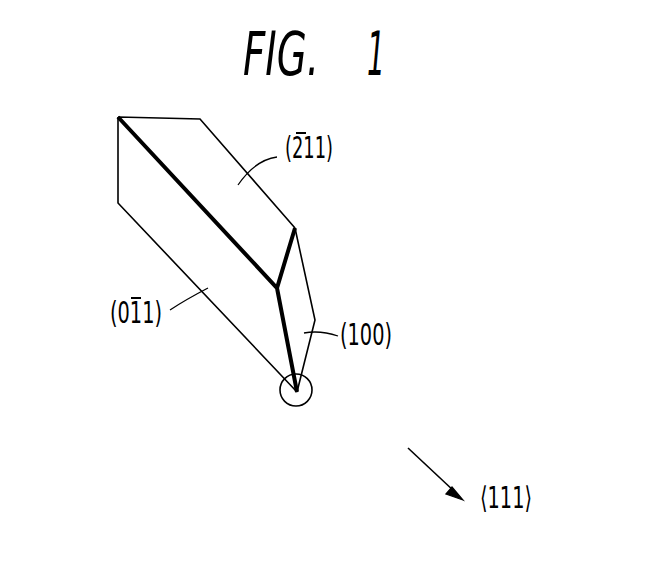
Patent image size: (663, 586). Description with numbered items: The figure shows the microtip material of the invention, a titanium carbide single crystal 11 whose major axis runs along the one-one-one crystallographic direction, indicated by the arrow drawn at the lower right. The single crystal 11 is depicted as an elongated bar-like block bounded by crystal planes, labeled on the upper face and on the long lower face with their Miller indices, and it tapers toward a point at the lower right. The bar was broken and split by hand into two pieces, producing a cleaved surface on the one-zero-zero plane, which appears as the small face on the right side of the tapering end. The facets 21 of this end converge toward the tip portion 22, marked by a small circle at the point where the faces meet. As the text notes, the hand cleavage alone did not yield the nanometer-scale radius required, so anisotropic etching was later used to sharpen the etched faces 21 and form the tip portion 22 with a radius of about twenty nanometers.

The single crystal 11 is at (200, 133).
The etched faces 21 is at (298, 268).
The tip portion 22 is at (312, 395).